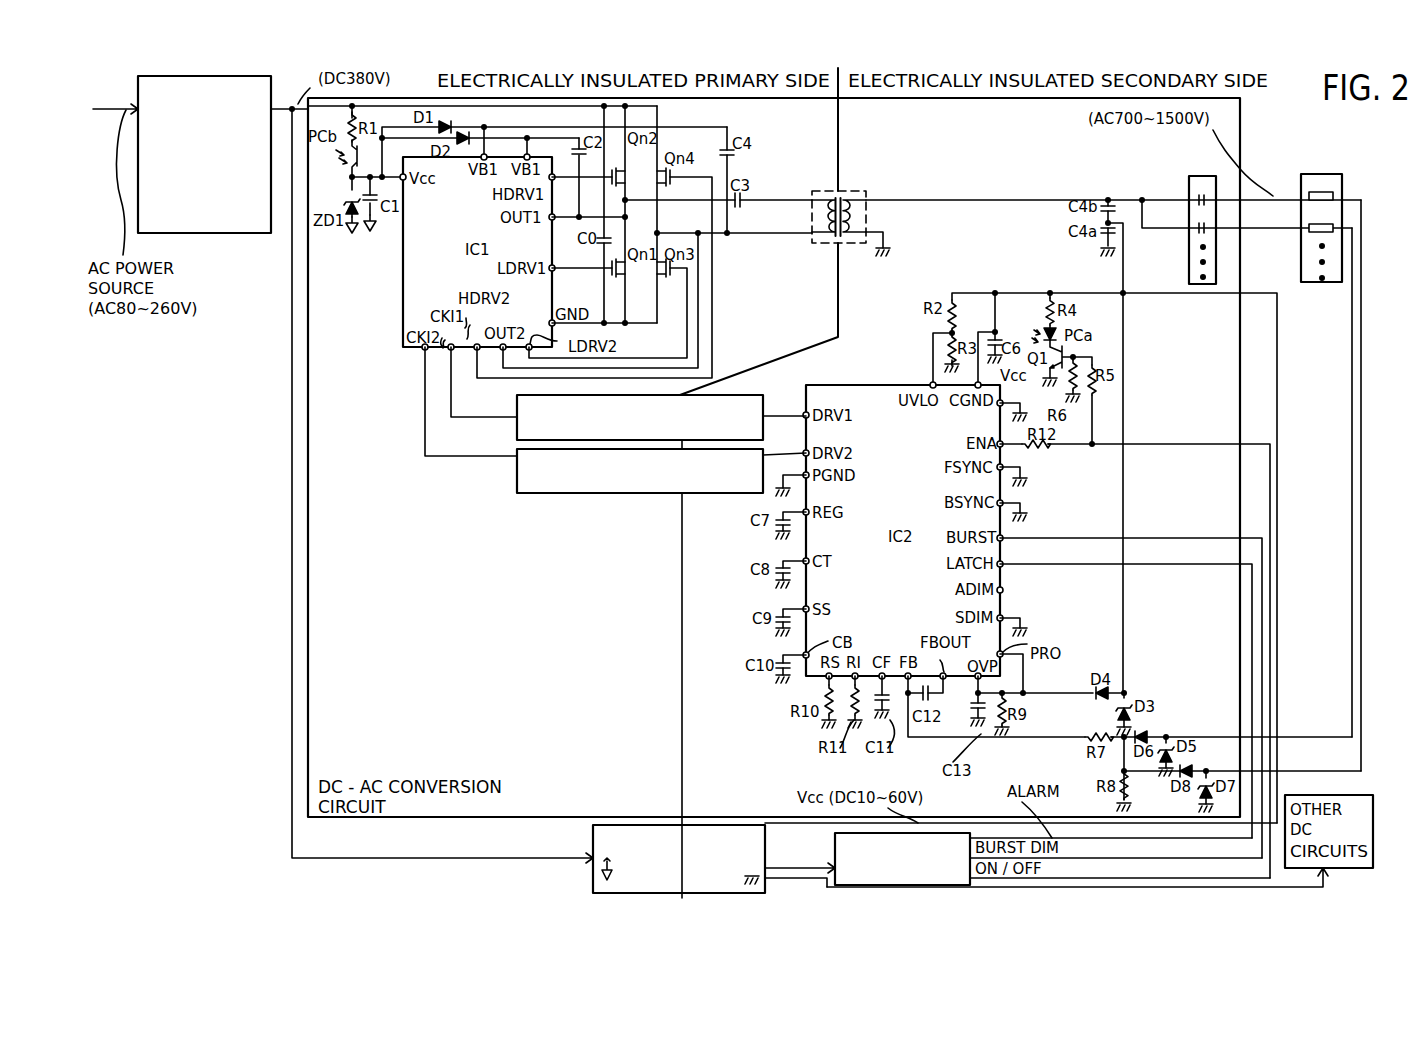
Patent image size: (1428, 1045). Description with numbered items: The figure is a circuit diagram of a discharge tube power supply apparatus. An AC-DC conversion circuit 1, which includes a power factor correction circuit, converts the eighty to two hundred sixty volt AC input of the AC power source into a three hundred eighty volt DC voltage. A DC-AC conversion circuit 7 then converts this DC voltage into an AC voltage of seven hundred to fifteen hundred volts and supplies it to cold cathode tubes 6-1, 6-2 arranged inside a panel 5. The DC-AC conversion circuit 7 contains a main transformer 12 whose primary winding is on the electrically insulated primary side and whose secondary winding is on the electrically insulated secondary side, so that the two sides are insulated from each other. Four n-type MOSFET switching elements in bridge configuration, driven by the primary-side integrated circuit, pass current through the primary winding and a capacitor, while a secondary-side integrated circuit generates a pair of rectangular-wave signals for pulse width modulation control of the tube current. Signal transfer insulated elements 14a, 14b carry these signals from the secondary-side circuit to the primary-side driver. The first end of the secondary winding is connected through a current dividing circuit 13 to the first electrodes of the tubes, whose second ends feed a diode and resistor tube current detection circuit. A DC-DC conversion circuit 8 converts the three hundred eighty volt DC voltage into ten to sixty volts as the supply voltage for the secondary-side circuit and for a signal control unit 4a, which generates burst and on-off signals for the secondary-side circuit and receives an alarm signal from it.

The AC-DC conversion circuit 1 is at (249, 233).
The DC-AC conversion circuit 7 is at (1240, 100).
The main transformer 12 is at (861, 187).
The current dividing circuit 13 is at (1188, 178).
The panel 5 is at (1316, 174).
The cold cathode tube 6-1 is at (1304, 195).
The cold cathode tube 6-2 is at (1304, 229).
The signal transfer insulated element 14a is at (517, 425).
The signal transfer insulated element 14b is at (517, 467).
The DC-DC conversion circuit 8 is at (593, 875).
The signal control unit 4a is at (835, 853).